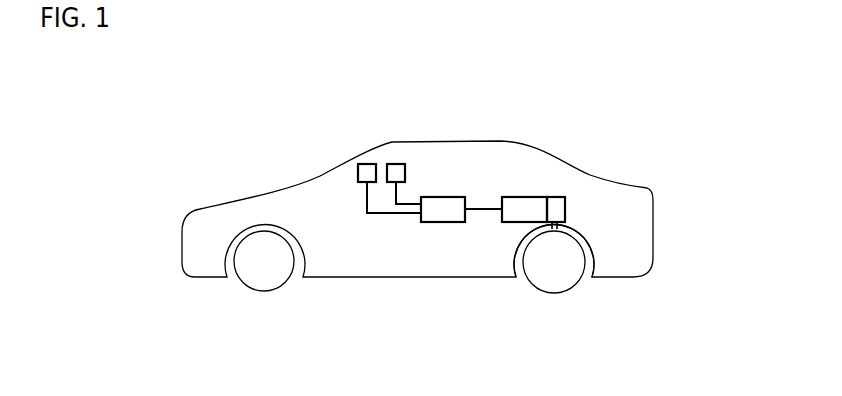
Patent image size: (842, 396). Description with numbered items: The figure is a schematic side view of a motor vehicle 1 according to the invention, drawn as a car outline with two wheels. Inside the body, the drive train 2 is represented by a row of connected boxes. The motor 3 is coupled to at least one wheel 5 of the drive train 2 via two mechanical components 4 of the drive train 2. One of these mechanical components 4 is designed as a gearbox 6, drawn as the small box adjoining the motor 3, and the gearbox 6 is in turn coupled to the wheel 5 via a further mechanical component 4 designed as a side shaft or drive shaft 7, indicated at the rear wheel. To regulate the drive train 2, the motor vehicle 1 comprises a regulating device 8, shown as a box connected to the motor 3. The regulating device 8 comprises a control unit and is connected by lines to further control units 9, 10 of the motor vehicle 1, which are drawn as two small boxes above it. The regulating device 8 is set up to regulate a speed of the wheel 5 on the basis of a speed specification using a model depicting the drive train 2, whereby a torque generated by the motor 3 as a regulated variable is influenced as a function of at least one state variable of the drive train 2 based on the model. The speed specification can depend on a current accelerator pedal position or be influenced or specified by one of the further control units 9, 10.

The motor vehicle 1 is at (578, 133).
The drive train 2 is at (485, 180).
The motor 3 is at (527, 207).
The mechanical component 4 is at (586, 221).
The wheel 5 is at (557, 272).
The gearbox 6 is at (557, 208).
The side shaft or drive shaft 7 is at (565, 236).
The regulating device 8 is at (433, 210).
The further control unit 9 is at (361, 163).
The further control unit 10 is at (390, 163).